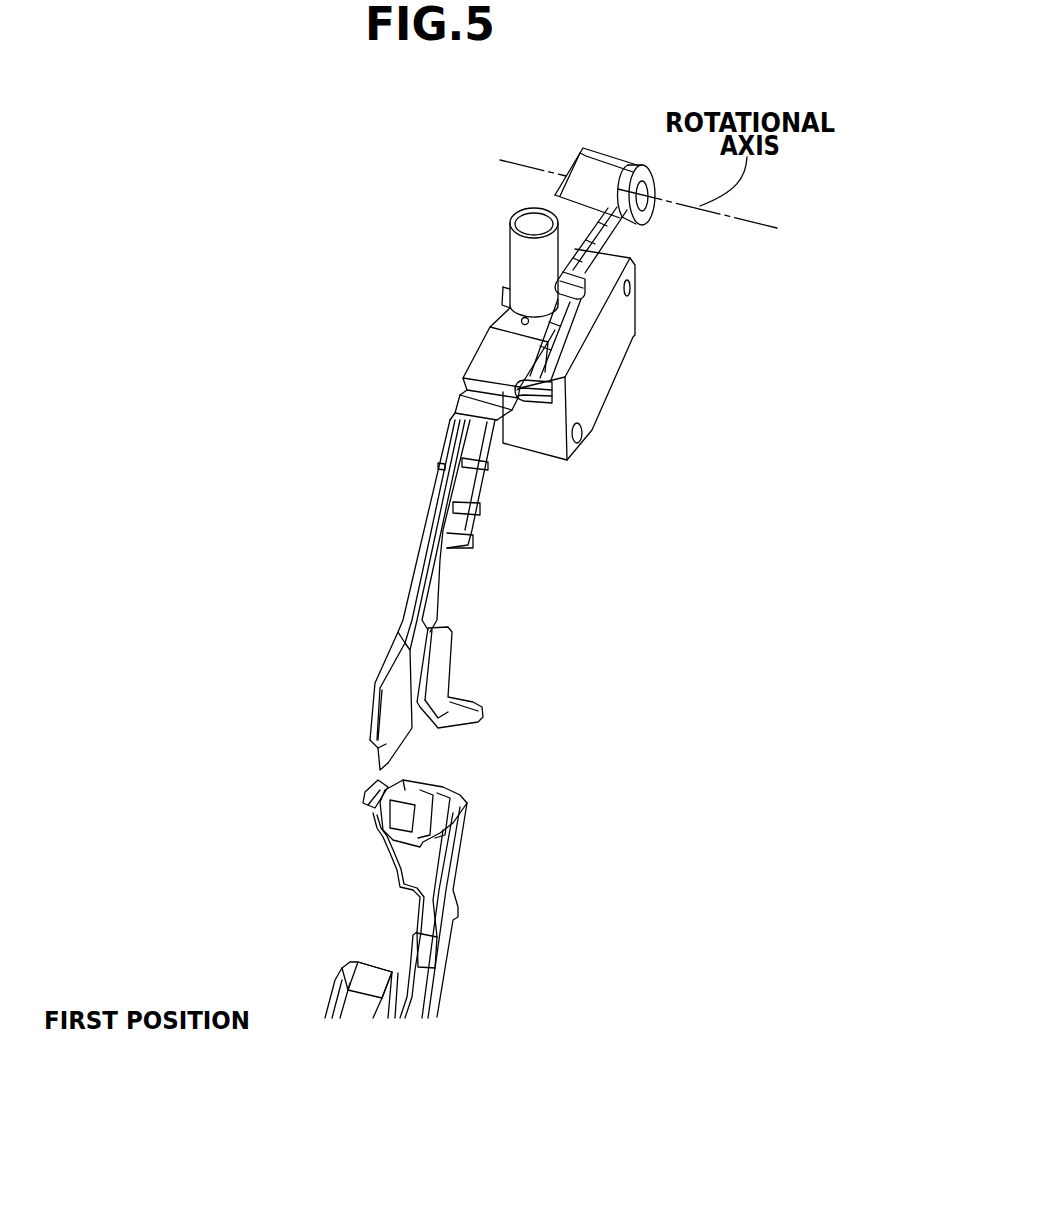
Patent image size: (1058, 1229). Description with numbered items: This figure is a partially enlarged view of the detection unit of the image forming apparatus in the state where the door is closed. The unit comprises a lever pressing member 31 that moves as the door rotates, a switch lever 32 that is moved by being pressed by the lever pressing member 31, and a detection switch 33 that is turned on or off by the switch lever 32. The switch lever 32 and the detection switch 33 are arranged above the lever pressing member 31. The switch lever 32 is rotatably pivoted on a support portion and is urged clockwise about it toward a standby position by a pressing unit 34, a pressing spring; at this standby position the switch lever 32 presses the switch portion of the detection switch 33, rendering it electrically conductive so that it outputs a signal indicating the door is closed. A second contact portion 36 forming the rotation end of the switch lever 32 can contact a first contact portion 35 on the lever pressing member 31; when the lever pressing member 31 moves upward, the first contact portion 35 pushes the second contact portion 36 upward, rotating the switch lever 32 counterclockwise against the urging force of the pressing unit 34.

The lever pressing member 31 is at (405, 850).
The switch lever 32 is at (391, 705).
The detection switch 33 is at (596, 378).
The pressing unit (pressing spring) 34 is at (530, 273).
The first contact portion 35 is at (362, 785).
The second contact portion 36 is at (377, 760).